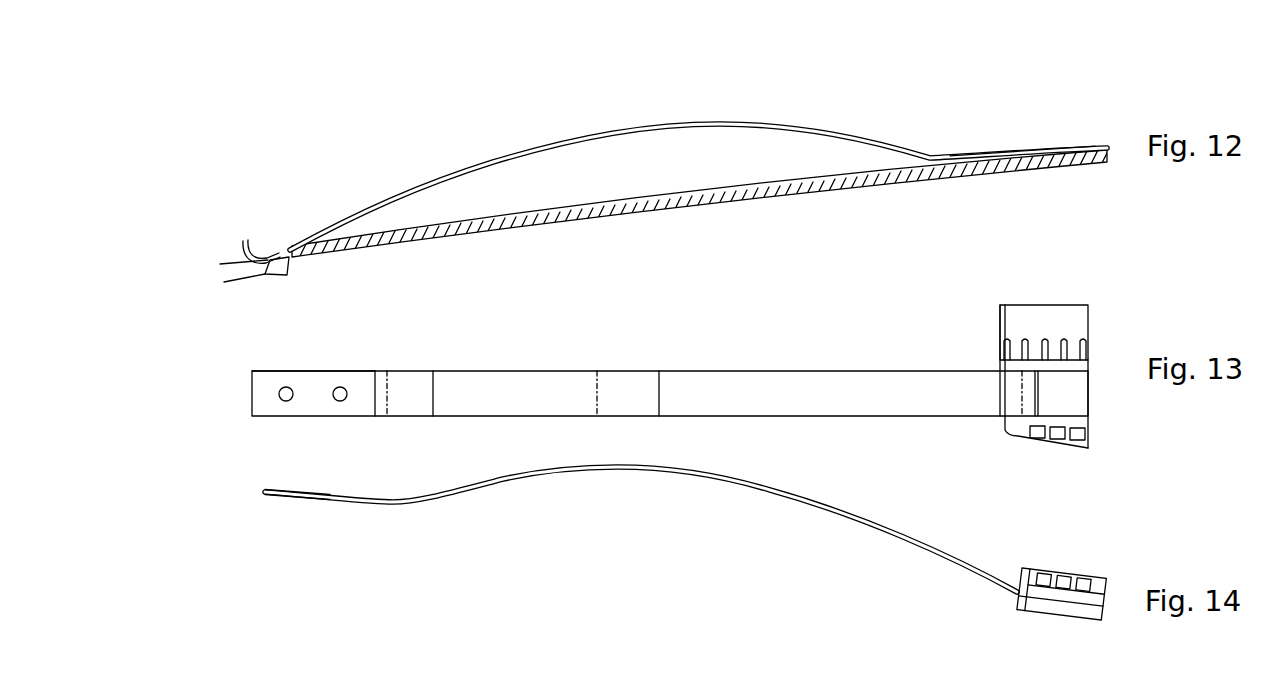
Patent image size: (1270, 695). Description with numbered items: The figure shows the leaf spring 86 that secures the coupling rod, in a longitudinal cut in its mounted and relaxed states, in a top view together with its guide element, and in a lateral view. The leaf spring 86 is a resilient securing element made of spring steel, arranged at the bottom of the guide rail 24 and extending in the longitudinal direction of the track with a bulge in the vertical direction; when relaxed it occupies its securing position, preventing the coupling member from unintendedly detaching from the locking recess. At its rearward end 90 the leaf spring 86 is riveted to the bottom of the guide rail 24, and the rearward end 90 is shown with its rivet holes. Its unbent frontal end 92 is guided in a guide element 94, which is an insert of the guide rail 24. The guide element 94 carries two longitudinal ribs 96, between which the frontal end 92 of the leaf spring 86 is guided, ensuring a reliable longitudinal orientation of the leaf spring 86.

In FIG. 12, the guide rail 24 is at (805, 183).
In FIG. 12, the leaf spring 86 is at (558, 142).
In FIG. 13, the leaf spring 86 is at (702, 388).
In FIG. 14, the leaf spring 86 is at (630, 470).
In FIG. 12, the rearward end 90 is at (1010, 150).
In FIG. 13, the rearward end 90 is at (313, 385).
In FIG. 12, the frontal end 92 is at (278, 252).
In FIG. 13, the frontal end 92 is at (1065, 393).
In FIG. 14, the frontal end 92 is at (328, 497).
In FIG. 13, the guide element 94 is at (1062, 315).
In FIG. 14, the guide element 94 is at (1130, 568).
In FIG. 13, the longitudinal ribs 96 is at (1018, 358).
In FIG. 14, the longitudinal ribs 96 is at (1092, 582).